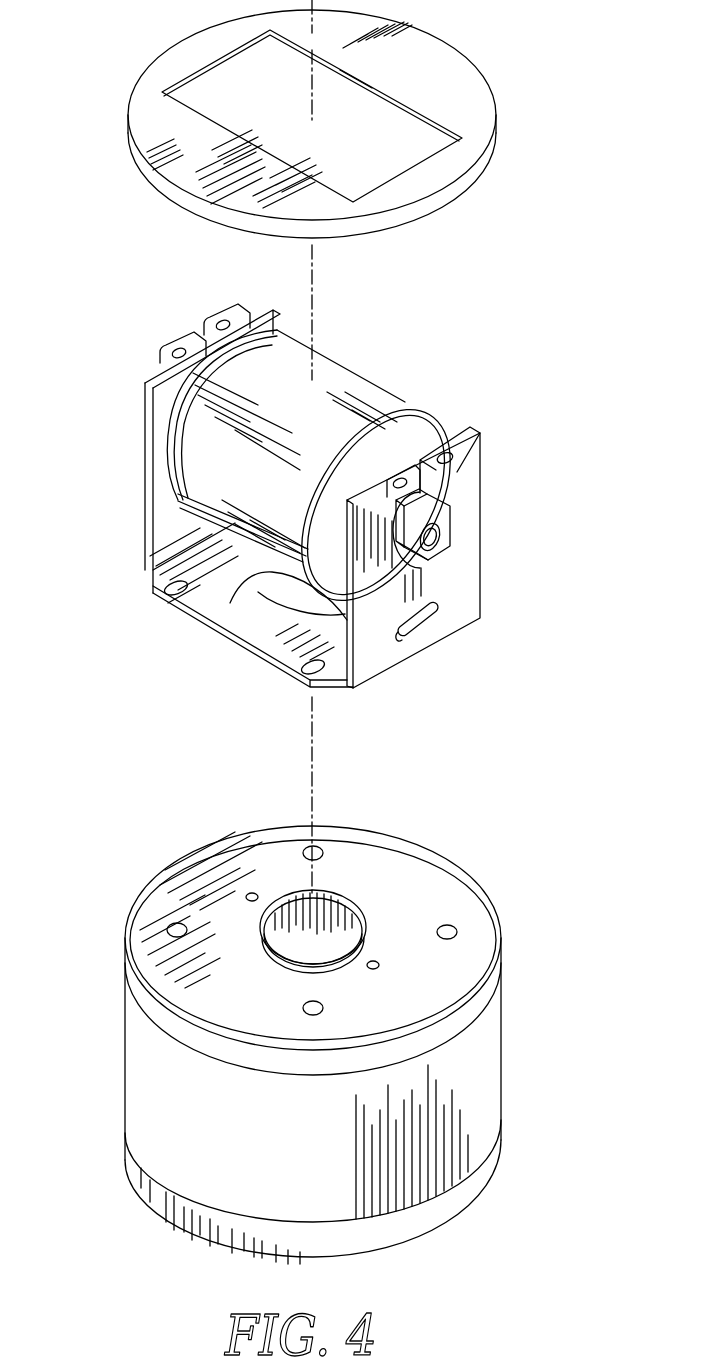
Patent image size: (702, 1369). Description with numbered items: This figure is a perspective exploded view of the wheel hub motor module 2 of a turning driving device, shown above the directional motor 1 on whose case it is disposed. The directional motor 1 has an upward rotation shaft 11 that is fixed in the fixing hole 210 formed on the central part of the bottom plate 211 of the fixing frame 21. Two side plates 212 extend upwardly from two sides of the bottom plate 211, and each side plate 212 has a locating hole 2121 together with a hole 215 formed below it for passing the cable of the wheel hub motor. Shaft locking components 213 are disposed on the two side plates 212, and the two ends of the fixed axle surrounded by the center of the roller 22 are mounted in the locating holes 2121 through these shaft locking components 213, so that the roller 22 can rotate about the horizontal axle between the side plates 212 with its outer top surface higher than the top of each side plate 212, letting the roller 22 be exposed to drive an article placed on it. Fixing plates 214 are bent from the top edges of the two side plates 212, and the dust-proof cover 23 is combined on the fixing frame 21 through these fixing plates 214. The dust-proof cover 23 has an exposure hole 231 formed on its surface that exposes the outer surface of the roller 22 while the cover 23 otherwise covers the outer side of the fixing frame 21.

The directional motor 1 is at (168, 1073).
The rotation shaft 11 is at (367, 933).
The wheel hub motor module 2 is at (136, 294).
The fixing frame 21 is at (130, 455).
The fixing hole 210 is at (237, 592).
The bottom plate 211 is at (198, 598).
The side plate 212 is at (368, 652).
The locating hole 2121 is at (203, 344).
The shaft locking component 213 is at (443, 538).
The fixing plate 214 is at (460, 455).
The hole 215 is at (420, 627).
The roller 22 is at (388, 402).
The dust-proof cover 23 is at (470, 108).
The exposure hole 231 is at (368, 83).